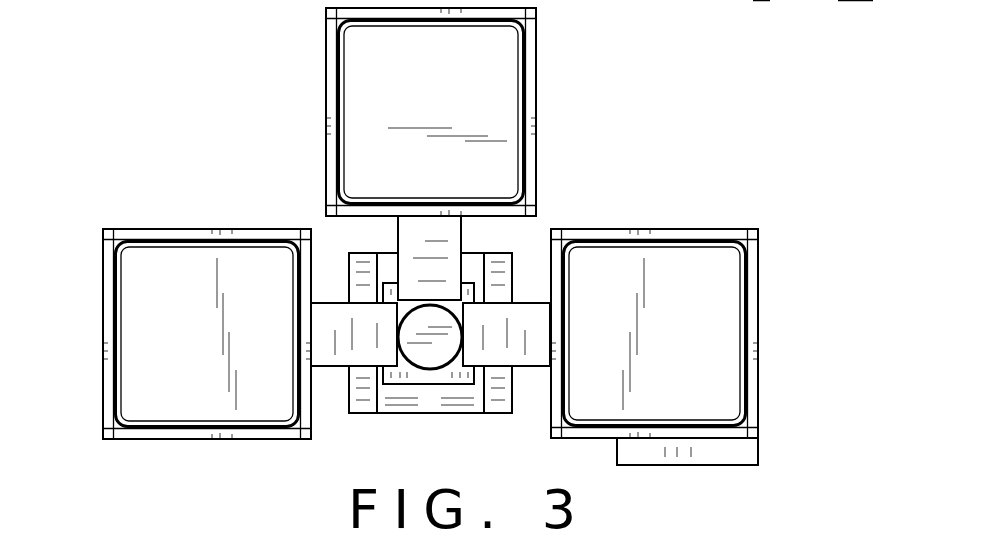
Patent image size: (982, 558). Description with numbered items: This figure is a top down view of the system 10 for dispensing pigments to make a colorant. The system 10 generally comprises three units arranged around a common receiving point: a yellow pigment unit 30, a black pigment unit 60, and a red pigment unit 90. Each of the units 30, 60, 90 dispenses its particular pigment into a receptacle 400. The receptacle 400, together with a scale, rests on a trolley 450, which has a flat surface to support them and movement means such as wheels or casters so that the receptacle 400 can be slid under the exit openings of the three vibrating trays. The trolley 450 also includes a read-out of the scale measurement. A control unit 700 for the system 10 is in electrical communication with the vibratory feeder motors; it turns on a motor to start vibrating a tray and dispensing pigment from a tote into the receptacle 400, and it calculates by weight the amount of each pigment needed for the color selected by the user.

The system 10 is at (695, 120).
The yellow pigment unit 30 is at (236, 178).
The black pigment unit 60 is at (562, 102).
The red pigment unit 90 is at (787, 323).
The receptacle 400 is at (429, 350).
The trolley 450 is at (498, 274).
The control unit 700 is at (748, 450).